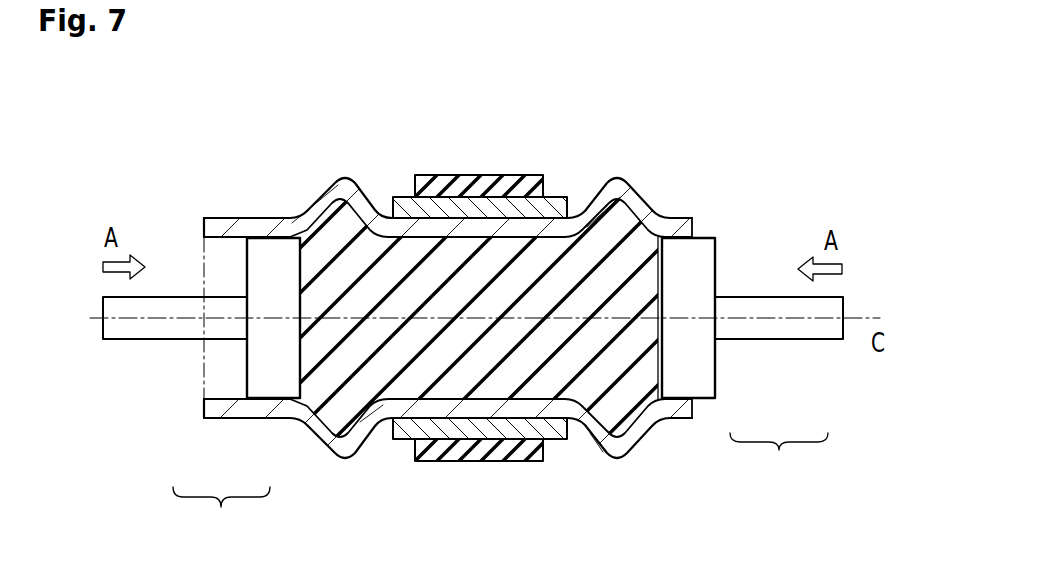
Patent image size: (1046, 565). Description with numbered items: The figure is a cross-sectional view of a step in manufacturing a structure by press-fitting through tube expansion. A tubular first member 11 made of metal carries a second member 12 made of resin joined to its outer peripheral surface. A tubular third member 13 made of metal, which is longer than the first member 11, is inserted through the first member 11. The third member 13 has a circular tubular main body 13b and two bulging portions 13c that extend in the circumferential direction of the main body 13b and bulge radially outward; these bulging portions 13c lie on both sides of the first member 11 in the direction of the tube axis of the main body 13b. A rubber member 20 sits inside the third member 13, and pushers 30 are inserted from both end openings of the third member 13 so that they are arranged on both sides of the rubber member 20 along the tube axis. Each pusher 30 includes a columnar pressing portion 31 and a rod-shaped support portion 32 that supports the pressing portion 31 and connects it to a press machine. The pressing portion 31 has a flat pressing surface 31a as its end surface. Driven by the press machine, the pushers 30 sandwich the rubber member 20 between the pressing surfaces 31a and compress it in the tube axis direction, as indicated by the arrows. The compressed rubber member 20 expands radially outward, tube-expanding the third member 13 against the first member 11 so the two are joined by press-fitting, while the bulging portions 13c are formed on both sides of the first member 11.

The first member 11 is at (562, 216).
The second member 12 is at (465, 174).
The third member 13 is at (677, 217).
The main body 13b is at (232, 217).
The bulging portions 13c is at (345, 172).
The rubber member 20 is at (612, 236).
The pusher 30 is at (500, 488).
The pressing portion 31 is at (270, 387).
The pressing surface 31a is at (303, 398).
The support portion 32 is at (172, 340).